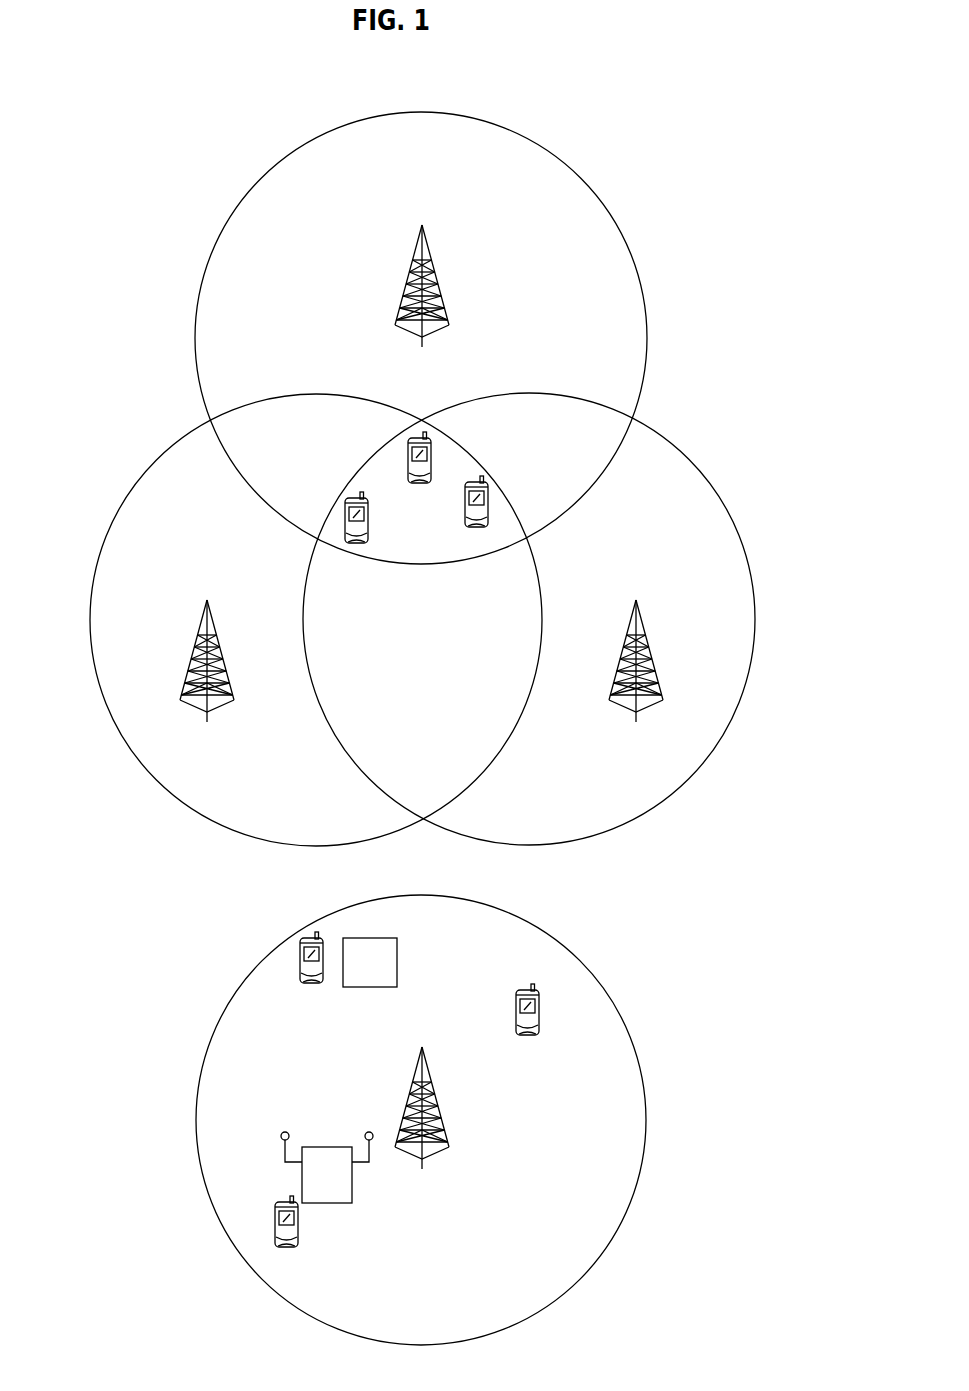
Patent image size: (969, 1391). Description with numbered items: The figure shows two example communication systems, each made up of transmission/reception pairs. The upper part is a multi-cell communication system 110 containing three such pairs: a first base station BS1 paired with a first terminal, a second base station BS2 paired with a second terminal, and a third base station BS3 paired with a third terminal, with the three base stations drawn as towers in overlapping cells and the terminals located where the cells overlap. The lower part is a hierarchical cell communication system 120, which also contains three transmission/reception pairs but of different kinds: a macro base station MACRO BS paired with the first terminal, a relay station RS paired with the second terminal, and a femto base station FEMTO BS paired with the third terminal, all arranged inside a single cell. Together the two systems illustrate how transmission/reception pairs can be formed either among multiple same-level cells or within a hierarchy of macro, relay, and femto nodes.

The multi-cell communication system 110 is at (397, 479).
The hierarchical cell communication system 120 is at (384, 1120).
The base station 1 BS1 is at (422, 268).
The base station 2 BS2 is at (207, 677).
The base station 3 BS3 is at (636, 677).
The relay station RS is at (370, 962).
The macro base station MACRO BS is at (486, 1108).
The femto base station FEMTO BS is at (359, 1183).